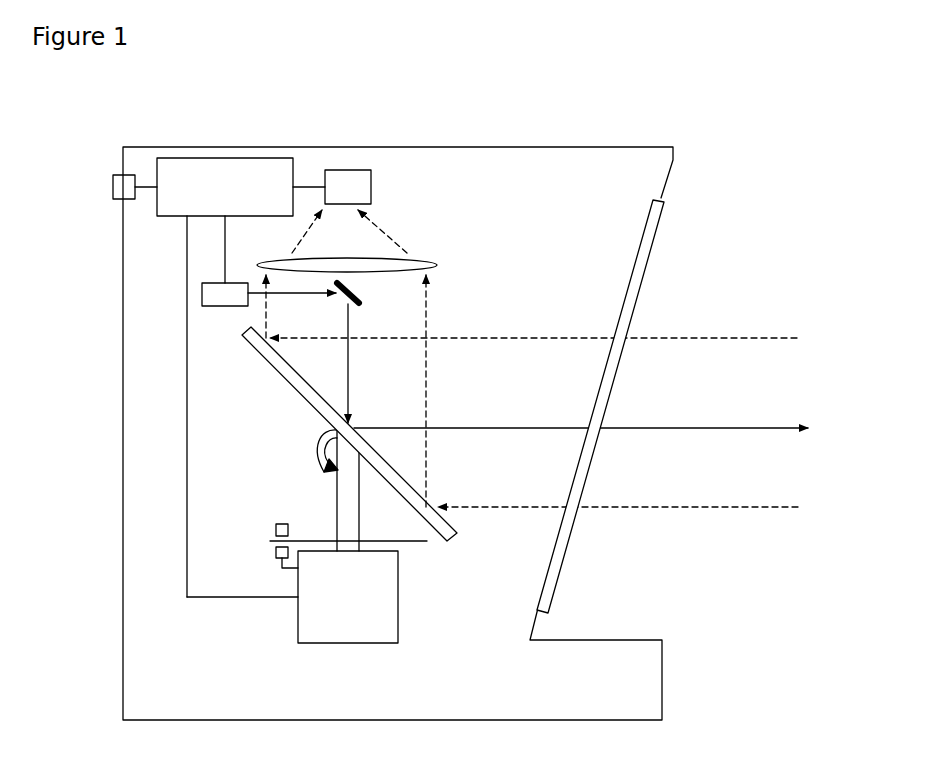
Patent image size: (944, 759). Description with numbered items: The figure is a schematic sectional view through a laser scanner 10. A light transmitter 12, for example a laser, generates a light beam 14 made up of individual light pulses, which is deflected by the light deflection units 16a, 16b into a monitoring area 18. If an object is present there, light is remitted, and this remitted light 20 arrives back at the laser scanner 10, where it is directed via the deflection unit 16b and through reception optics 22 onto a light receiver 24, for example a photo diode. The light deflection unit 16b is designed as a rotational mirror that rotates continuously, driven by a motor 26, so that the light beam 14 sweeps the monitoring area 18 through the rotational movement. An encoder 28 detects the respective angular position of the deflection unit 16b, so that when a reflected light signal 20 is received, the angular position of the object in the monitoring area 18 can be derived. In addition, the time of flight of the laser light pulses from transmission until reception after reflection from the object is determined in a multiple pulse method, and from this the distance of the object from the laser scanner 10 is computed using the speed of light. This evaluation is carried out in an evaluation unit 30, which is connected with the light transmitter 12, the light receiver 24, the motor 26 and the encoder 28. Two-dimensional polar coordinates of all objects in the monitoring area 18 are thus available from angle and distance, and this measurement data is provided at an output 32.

The laser scanner 10 is at (637, 93).
The light transmitter 12 is at (213, 295).
The light beam 14 is at (685, 430).
The light deflection unit 16a is at (360, 297).
The light deflection unit 16b is at (315, 398).
The monitoring area 18 is at (853, 250).
The remitted light 20 is at (740, 340).
The reception optics 22 is at (412, 260).
The light receiver 24 is at (371, 190).
The motor 26 is at (398, 632).
The encoder 28 is at (285, 538).
The evaluation unit 30 is at (288, 158).
The output 32 is at (112, 194).